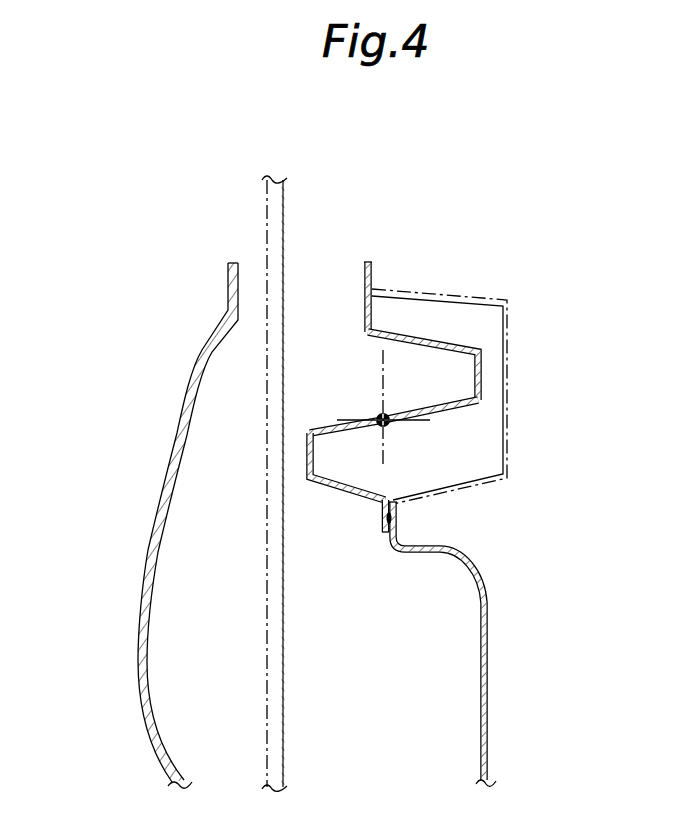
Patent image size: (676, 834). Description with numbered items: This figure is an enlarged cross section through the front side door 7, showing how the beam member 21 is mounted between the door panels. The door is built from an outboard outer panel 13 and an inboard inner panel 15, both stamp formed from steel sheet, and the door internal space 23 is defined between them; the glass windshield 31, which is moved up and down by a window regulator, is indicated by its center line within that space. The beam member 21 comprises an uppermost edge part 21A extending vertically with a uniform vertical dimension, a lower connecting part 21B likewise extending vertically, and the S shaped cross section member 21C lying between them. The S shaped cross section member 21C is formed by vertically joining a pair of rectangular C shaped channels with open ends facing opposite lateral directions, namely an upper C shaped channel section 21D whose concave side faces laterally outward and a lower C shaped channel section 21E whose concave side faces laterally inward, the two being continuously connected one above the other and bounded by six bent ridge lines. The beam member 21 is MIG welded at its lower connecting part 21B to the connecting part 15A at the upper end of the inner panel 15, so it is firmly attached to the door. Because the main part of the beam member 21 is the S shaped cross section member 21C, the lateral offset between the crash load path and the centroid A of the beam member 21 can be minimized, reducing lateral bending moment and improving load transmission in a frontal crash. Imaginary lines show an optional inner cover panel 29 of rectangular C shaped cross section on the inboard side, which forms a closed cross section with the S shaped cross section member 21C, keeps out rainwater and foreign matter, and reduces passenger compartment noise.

The front side door 7 is at (143, 525).
The outer panel 13 is at (143, 525).
The door internal space 23 is at (200, 637).
The glass windshield 31 is at (283, 720).
The beam member 21 is at (431, 410).
The uppermost edge part 21A is at (372, 284).
The lower connecting part 21B is at (382, 512).
The S shaped cross section member 21C is at (562, 325).
The upper C shaped channel section 21D is at (360, 338).
The lower C shaped channel section 21E is at (403, 426).
The inner cover panel 29 is at (420, 290).
The centroid A is at (390, 421).
The inner panel 15 is at (464, 644).
The connecting part 15A is at (396, 528).